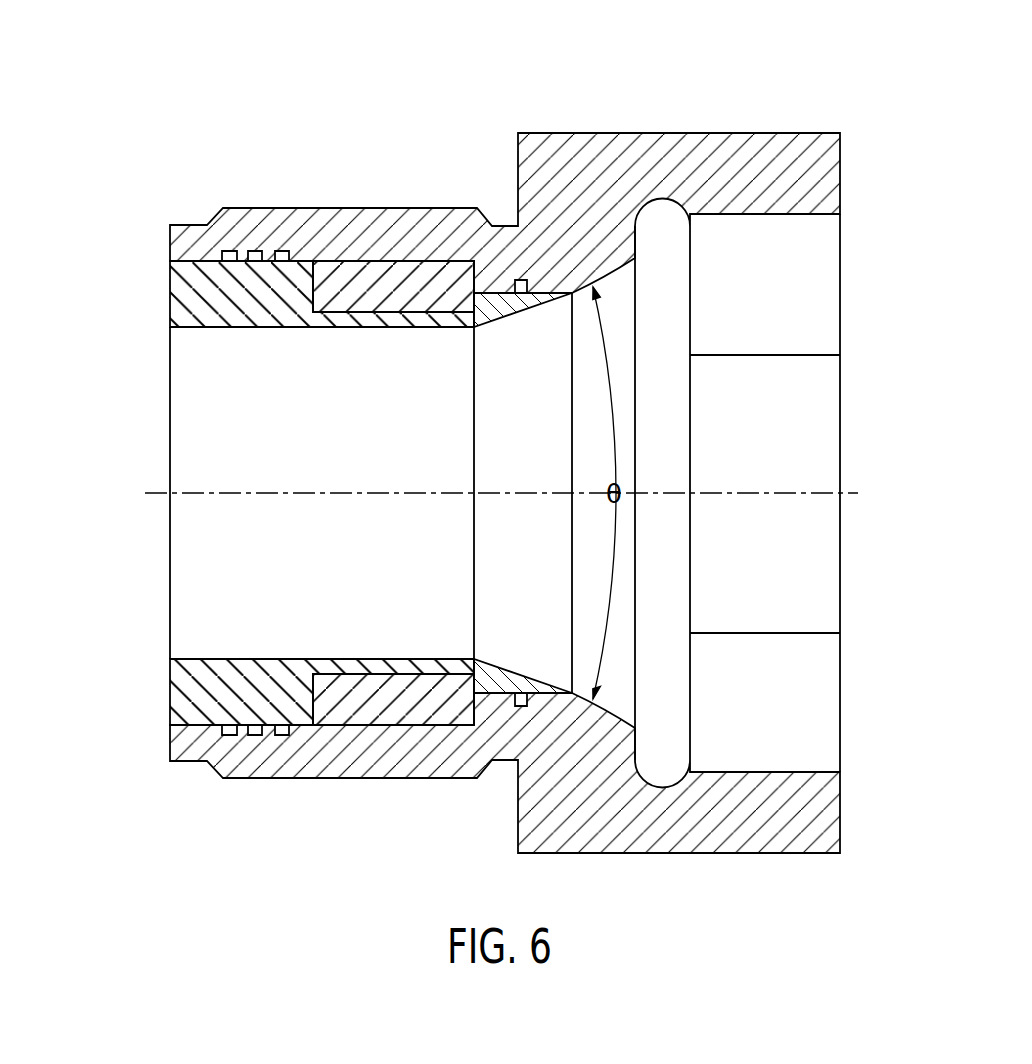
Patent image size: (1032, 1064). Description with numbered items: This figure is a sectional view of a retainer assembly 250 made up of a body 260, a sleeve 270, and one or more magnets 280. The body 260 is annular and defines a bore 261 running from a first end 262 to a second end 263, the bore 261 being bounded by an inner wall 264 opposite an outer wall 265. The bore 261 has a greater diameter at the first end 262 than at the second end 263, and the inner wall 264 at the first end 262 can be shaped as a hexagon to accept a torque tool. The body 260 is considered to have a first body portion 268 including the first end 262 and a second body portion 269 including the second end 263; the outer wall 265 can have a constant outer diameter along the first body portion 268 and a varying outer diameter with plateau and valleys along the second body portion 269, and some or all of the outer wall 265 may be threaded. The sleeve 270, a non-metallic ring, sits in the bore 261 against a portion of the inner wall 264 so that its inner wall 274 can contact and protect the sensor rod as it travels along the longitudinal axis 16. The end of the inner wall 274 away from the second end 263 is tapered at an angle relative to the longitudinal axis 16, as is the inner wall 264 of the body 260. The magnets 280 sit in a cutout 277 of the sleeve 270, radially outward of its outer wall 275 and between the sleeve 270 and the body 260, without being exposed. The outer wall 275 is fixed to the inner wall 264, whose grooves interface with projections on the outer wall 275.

The retainer assembly 250 is at (132, 90).
The first body portion 268 is at (637, 88).
The second body portion 269 is at (375, 168).
The outer wall 265 is at (270, 207).
The cutout 277 is at (313, 304).
The second end 263 is at (168, 240).
The sleeve 270 is at (183, 297).
The first end 262 is at (842, 167).
The inner wall 264 is at (800, 215).
The bore 261 is at (758, 419).
The longitudinal axis 16 is at (826, 494).
The inner wall 274 is at (218, 660).
The outer wall 275 is at (213, 732).
The magnet 280 is at (342, 717).
The body 260 is at (789, 838).